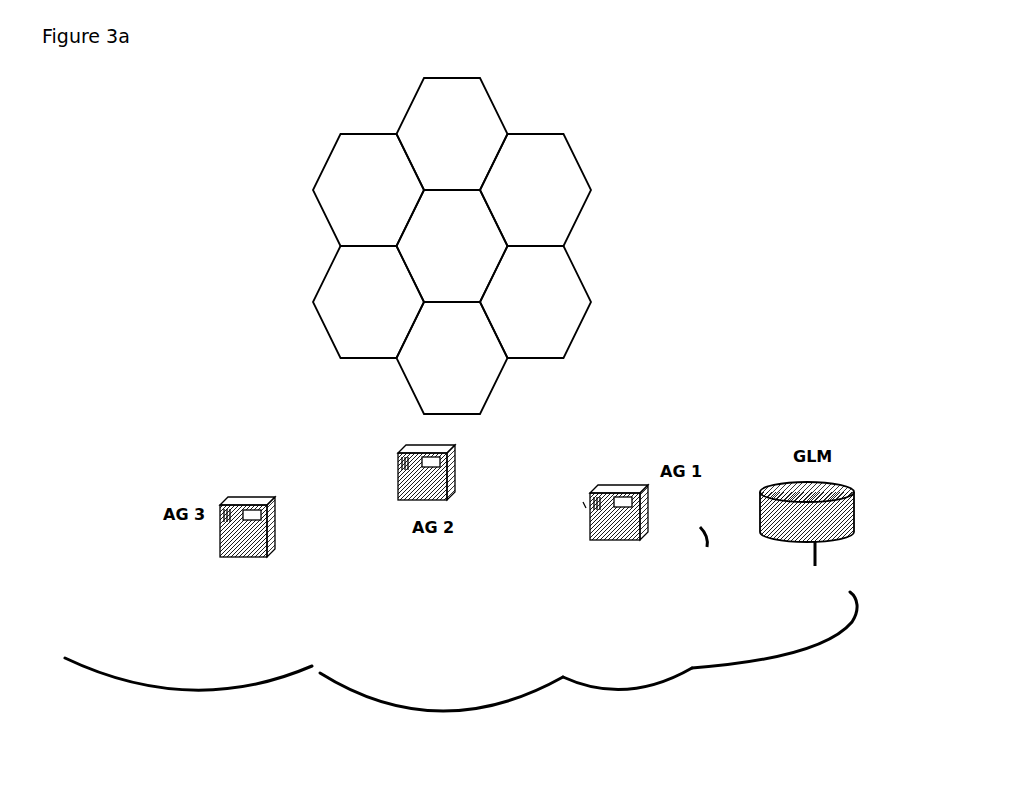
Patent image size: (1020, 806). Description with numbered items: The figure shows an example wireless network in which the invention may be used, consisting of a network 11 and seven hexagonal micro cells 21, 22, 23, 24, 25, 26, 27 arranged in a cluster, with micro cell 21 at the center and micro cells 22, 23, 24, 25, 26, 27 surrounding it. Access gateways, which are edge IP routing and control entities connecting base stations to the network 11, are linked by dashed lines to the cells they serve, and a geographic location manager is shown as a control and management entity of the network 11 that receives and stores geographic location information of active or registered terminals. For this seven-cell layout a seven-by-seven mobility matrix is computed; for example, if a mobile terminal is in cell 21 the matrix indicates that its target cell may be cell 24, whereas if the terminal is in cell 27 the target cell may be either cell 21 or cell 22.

The micro cell 22 is at (412, 440).
The micro cell 21 is at (425, 440).
The micro cell 25 is at (441, 440).
The micro cell 27 is at (235, 498).
The micro cell 26 is at (260, 498).
The micro cell 23 is at (618, 482).
The micro cell 24 is at (605, 482).
The network 11 is at (461, 641).